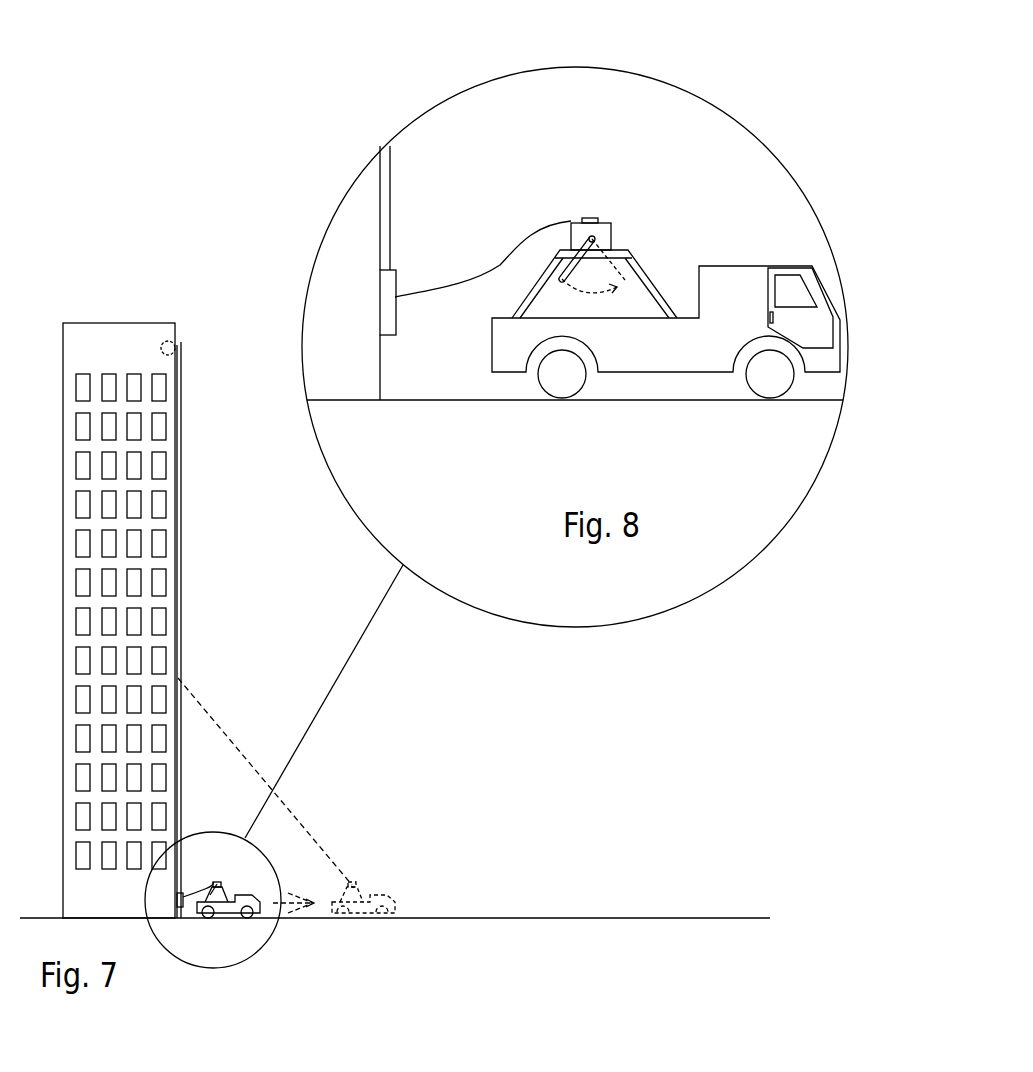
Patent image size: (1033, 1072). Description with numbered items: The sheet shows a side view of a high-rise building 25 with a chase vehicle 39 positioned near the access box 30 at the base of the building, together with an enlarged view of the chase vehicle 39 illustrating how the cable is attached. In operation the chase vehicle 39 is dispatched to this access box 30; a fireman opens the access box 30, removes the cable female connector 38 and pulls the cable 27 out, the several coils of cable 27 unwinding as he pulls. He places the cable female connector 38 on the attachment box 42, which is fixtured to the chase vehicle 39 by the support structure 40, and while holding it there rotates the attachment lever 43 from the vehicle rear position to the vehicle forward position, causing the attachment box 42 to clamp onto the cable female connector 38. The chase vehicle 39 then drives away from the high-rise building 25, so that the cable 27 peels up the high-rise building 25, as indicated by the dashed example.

In FIG. 7, the high-rise building 25 is at (122, 350).
In FIG. 7, the cable 27 is at (302, 827).
In FIG. 8, the cable 27 is at (530, 228).
In FIG. 7, the access box 30 is at (182, 908).
In FIG. 8, the access box 30 is at (397, 335).
In FIG. 8, the cable female connector 38 is at (587, 220).
In FIG. 7, the chase vehicle 39 is at (363, 915).
In FIG. 8, the chase vehicle 39 is at (778, 265).
In FIG. 8, the support structure 40 is at (655, 287).
In FIG. 8, the attachment box 42 is at (612, 237).
In FIG. 8, the attachment lever 43 is at (590, 239).